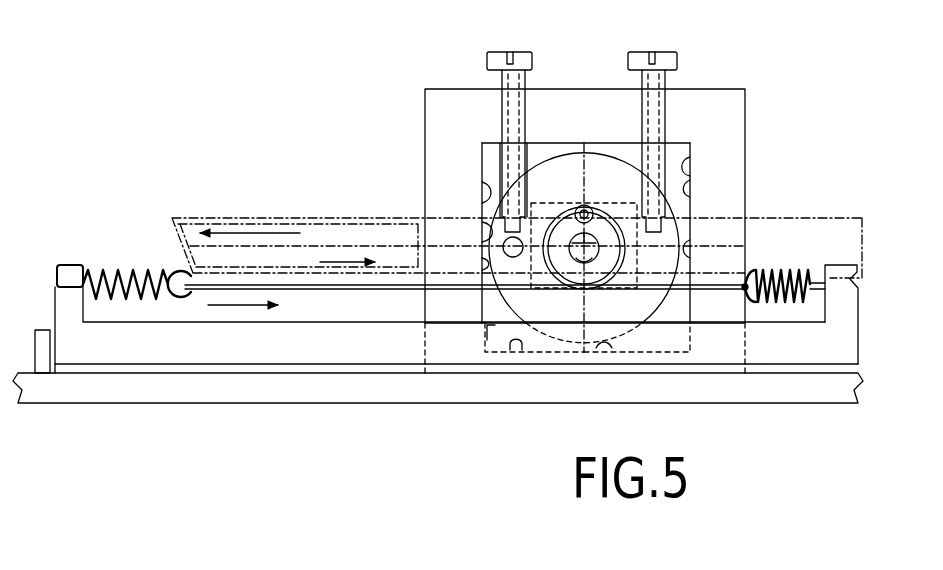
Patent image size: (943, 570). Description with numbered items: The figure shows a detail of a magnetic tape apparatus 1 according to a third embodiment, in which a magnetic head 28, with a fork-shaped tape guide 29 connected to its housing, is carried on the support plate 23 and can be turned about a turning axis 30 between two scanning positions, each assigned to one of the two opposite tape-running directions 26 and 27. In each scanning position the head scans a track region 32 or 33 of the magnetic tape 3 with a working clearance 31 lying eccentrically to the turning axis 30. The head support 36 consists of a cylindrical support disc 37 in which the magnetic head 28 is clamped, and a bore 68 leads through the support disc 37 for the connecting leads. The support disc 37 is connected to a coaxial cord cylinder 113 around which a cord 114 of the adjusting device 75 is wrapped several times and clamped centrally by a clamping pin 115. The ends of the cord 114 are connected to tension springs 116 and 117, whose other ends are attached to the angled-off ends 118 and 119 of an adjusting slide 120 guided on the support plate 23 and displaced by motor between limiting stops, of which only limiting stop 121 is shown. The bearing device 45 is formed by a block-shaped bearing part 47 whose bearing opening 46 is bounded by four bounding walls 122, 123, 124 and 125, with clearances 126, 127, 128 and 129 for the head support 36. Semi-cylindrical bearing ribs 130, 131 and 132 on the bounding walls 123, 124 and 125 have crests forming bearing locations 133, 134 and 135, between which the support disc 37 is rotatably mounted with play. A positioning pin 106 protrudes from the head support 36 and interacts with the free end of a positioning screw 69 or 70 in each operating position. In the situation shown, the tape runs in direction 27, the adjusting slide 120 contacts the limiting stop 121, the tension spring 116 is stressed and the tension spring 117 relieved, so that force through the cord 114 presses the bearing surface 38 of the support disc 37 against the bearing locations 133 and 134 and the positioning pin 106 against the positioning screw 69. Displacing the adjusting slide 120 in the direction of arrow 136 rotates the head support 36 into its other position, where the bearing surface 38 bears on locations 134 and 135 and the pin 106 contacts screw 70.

The magnetic tape apparatus 1 is at (155, 447).
The magnetic tape 3 is at (857, 218).
The support plate 23 is at (213, 403).
The tape-running direction 26 is at (337, 262).
The tape-running direction 27 is at (235, 232).
The magnetic head 28 is at (630, 210).
The fork-shaped tape guide 29 is at (520, 282).
The turning axis 30 is at (592, 287).
The working clearance 31 is at (587, 206).
The track region 32 is at (272, 250).
The track region 33 is at (185, 225).
The head support 36 is at (557, 150).
The support disc 37 is at (570, 166).
The bearing surface 38 is at (597, 156).
The bearing device 45 is at (747, 93).
The bearing opening 46 is at (687, 143).
The bearing part 47 is at (695, 110).
The bore 68 is at (577, 283).
The positioning screw 69 is at (487, 60).
The positioning screw 70 is at (677, 62).
The adjusting device 75 is at (45, 265).
The positioning pin 106 is at (487, 290).
The cord cylinder 113 is at (690, 305).
The cord 114 is at (362, 289).
The clamping pin 115 is at (577, 205).
The tension spring 116 is at (125, 270).
The tension spring 117 is at (790, 268).
The angled-off end 118 is at (70, 270).
The angled-off end 119 is at (837, 265).
The adjusting slide 120 is at (354, 364).
The limiting stop 121 is at (43, 362).
The bounding wall 122 is at (541, 148).
The bounding wall 123 is at (490, 188).
The bounding wall 124 is at (520, 350).
The bounding wall 125 is at (689, 160).
The clearance 126 is at (489, 312).
The clearance 127 is at (677, 316).
The clearance 128 is at (687, 197).
The clearance 129 is at (492, 152).
The bearing rib 130 is at (492, 240).
The bearing rib 131 is at (585, 343).
The bearing rib 132 is at (687, 247).
The bearing location 133 is at (492, 265).
The bearing location 134 is at (607, 347).
The bearing location 135 is at (688, 220).
The arrow 136 is at (273, 322).